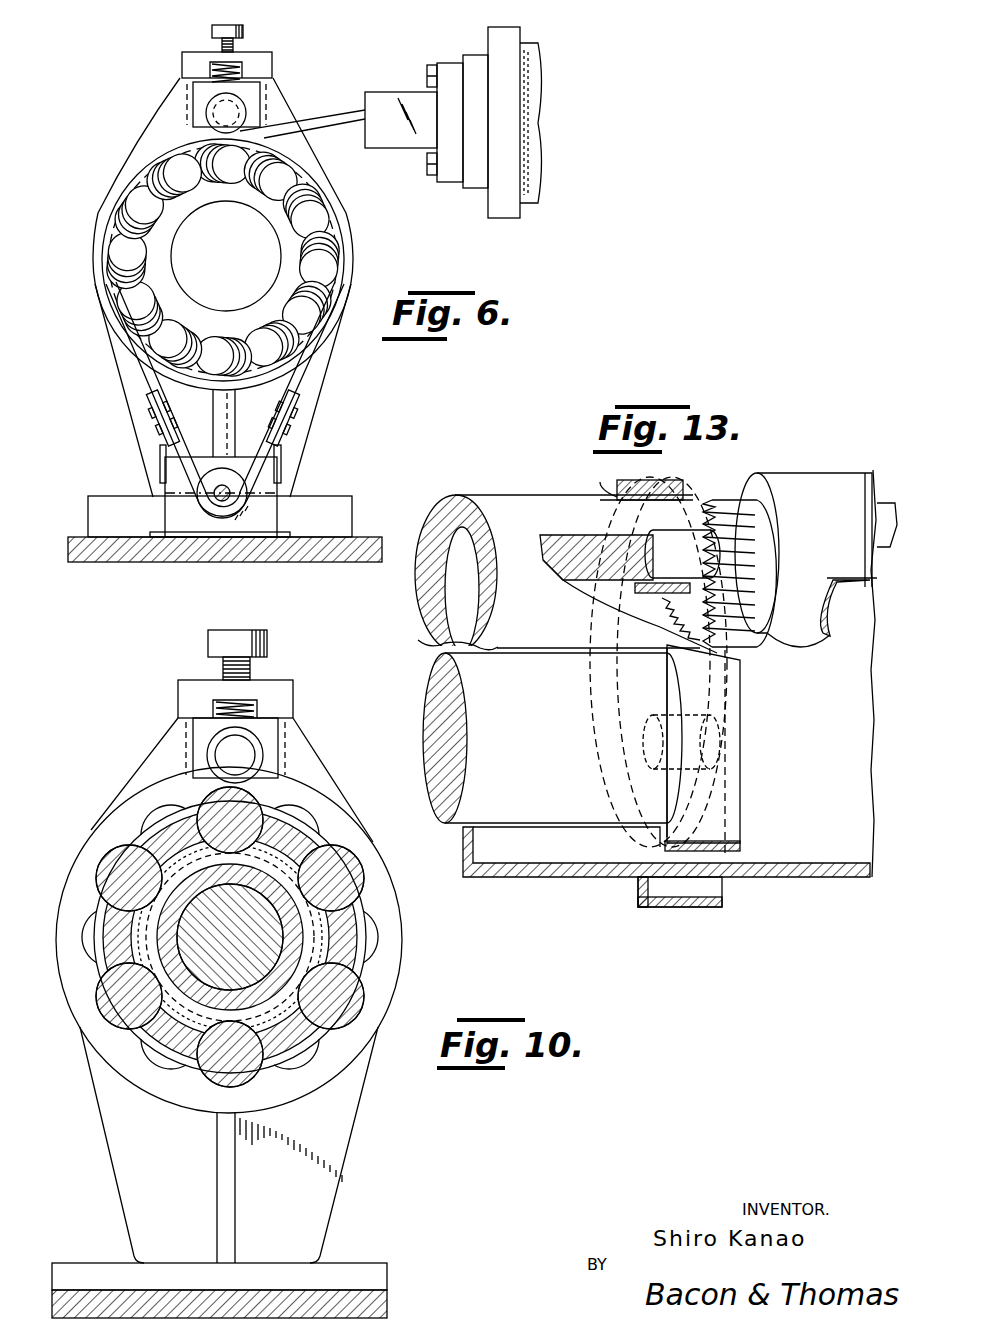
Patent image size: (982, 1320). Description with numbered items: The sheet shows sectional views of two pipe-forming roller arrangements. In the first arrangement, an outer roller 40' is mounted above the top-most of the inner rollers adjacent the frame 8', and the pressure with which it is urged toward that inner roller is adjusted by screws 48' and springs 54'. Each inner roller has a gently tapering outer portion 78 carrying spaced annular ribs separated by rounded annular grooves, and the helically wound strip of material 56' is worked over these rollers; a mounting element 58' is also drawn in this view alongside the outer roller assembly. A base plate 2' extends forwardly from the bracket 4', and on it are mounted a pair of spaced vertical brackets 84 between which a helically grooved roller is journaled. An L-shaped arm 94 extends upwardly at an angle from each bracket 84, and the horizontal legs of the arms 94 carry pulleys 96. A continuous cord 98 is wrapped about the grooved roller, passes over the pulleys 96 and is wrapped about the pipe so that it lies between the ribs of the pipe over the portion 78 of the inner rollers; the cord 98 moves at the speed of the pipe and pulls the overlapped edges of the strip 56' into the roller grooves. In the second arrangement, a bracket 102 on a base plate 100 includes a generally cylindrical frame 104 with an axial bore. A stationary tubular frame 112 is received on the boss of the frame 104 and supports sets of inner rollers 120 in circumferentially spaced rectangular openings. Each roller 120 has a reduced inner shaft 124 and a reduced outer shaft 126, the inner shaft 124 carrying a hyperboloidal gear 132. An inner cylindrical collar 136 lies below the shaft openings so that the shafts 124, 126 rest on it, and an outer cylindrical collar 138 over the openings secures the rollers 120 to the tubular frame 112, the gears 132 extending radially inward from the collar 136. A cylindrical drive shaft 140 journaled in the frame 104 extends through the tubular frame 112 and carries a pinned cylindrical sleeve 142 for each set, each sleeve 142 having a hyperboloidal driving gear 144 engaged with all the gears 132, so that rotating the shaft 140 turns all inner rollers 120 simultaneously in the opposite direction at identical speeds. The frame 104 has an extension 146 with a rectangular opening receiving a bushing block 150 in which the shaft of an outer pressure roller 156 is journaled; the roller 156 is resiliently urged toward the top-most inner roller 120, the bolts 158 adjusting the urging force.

In FIG. 6, the base plate 2' is at (225, 564).
In FIG. 6, the bracket 4' is at (223, 390).
In FIG. 6, the frame 8' is at (244, 234).
In FIG. 6, the outer roller 40' is at (197, 106).
In FIG. 6, the screws 48' is at (249, 34).
In FIG. 6, the springs 54' is at (225, 52).
In FIG. 6, the strip of material 56' is at (338, 112).
In FIG. 6, the bracket 58' is at (484, 121).
In FIG. 6, the tapering outer portion 78 is at (157, 285).
In FIG. 6, the vertical brackets 84 is at (277, 520).
In FIG. 6, the L-shaped arm 94 is at (160, 453).
In FIG. 6, the pulleys 96 is at (150, 405).
In FIG. 6, the continuous cord 98 is at (310, 380).
In FIG. 10, the base plate 100 is at (377, 1303).
In FIG. 10, the bracket 102 is at (102, 1090).
In FIG. 10, the cylindrical frame 104 is at (72, 858).
In FIG. 13, the tubular frame 112 is at (525, 507).
In FIG. 10, the inner rollers 120 is at (283, 812).
In FIG. 13, the inner rollers 120 is at (818, 480).
In FIG. 13, the inner shaft 124 is at (673, 547).
In FIG. 13, the outer shaft 126 is at (690, 712).
In FIG. 13, the hyperboloidal gear 132 is at (730, 500).
In FIG. 10, the inner cylindrical collar 136 is at (350, 912).
In FIG. 13, the inner cylindrical collar 136 is at (677, 892).
In FIG. 10, the outer cylindrical collar 138 is at (354, 967).
In FIG. 13, the outer cylindrical collar 138 is at (637, 482).
In FIG. 10, the drive shaft 140 is at (243, 912).
In FIG. 10, the cylindrical sleeve 142 is at (170, 942).
In FIG. 10, the hyperboloidal driving gear 144 is at (286, 951).
In FIG. 13, the hyperboloidal driving gear 144 is at (748, 637).
In FIG. 10, the extension 146 is at (300, 745).
In FIG. 10, the bushing block 150 is at (266, 736).
In FIG. 10, the outer pressure roller 156 is at (207, 753).
In FIG. 10, the bolts 158 is at (237, 637).